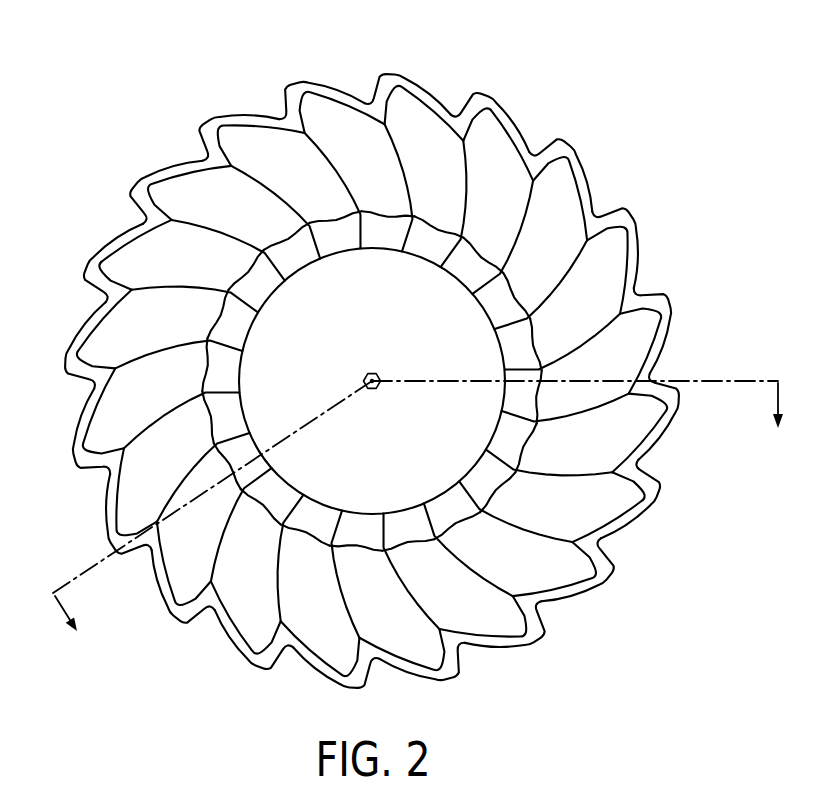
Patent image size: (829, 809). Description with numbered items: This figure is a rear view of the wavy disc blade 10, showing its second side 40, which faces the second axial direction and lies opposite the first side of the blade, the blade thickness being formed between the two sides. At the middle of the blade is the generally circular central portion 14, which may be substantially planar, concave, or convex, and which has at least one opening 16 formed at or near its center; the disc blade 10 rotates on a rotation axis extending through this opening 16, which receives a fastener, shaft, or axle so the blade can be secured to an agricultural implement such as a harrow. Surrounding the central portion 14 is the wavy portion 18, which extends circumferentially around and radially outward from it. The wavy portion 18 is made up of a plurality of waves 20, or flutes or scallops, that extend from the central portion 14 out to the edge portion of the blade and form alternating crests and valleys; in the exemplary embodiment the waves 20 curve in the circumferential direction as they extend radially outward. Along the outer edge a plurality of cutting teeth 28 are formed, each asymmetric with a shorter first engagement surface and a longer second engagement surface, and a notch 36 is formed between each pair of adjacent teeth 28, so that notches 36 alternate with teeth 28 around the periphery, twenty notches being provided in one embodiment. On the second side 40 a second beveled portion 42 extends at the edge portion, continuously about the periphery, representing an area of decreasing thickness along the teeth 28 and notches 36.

The wavy disc blade 10 is at (672, 91).
The central portion 14 is at (400, 441).
The opening 16 is at (371, 375).
The wavy portion 18 is at (342, 110).
The waves 20 is at (180, 190).
The cutting teeth 28 is at (230, 130).
The notch 36 is at (78, 390).
The second side 40 is at (485, 177).
The second beveled portion 42 is at (72, 455).